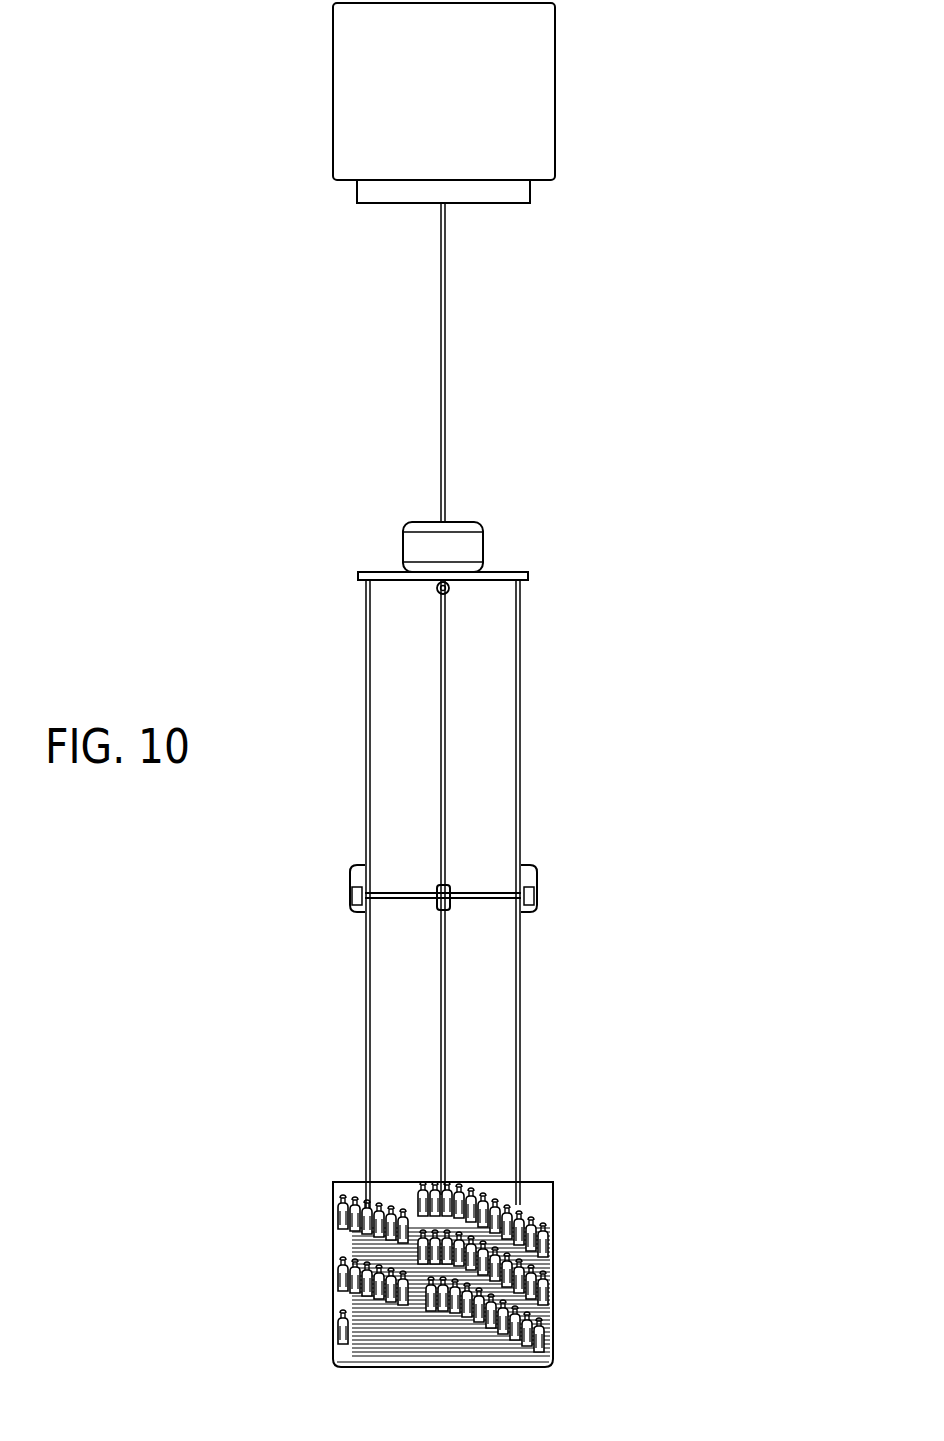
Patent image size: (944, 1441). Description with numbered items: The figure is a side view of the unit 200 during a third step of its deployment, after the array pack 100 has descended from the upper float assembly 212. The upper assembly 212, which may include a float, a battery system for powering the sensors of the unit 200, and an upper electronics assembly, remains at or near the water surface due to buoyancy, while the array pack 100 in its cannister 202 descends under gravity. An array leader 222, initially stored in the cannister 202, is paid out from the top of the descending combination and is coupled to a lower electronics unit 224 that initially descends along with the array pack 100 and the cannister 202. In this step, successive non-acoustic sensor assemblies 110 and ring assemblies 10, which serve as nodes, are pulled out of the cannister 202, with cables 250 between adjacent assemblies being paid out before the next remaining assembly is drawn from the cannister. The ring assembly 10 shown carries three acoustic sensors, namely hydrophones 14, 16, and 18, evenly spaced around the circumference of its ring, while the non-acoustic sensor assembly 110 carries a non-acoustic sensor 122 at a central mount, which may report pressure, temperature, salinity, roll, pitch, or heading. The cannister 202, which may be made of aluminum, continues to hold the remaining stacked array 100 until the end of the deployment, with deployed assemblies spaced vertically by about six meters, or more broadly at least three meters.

The unit 200 is at (445, 673).
The upper (float) assembly 212 is at (545, 95).
The array leader 222 is at (446, 360).
The lower electronics unit 224 is at (473, 545).
The non-acoustic sensor assembly 110 is at (358, 575).
The non-acoustic sensor (NAS) 122 is at (450, 590).
The cables 250 is at (522, 738).
The ring assembly 10 is at (437, 888).
The acoustic sensor (hydrophone) 14 is at (350, 897).
The acoustic sensor (hydrophone) 16 is at (452, 888).
The acoustic sensor (hydrophone) 18 is at (550, 897).
The array pack 100 is at (451, 1239).
The cannister 202 is at (333, 1293).